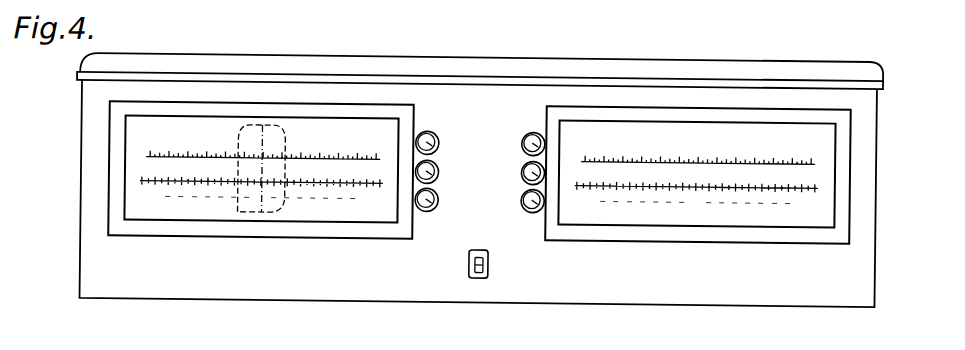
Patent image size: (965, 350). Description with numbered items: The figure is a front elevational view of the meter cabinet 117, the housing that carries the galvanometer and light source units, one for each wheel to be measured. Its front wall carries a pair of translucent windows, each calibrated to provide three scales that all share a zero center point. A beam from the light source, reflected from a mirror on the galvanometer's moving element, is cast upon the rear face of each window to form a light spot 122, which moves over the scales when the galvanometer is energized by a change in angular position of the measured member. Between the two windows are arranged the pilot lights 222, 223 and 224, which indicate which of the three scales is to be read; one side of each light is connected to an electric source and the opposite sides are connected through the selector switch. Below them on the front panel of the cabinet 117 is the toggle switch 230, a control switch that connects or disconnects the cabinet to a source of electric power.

The cabinet 117 is at (343, 64).
The light spot 122 is at (283, 130).
The pilot light 222 is at (527, 138).
The pilot light 223 is at (528, 168).
The pilot light 224 is at (532, 195).
The toggle switch 230 is at (490, 263).